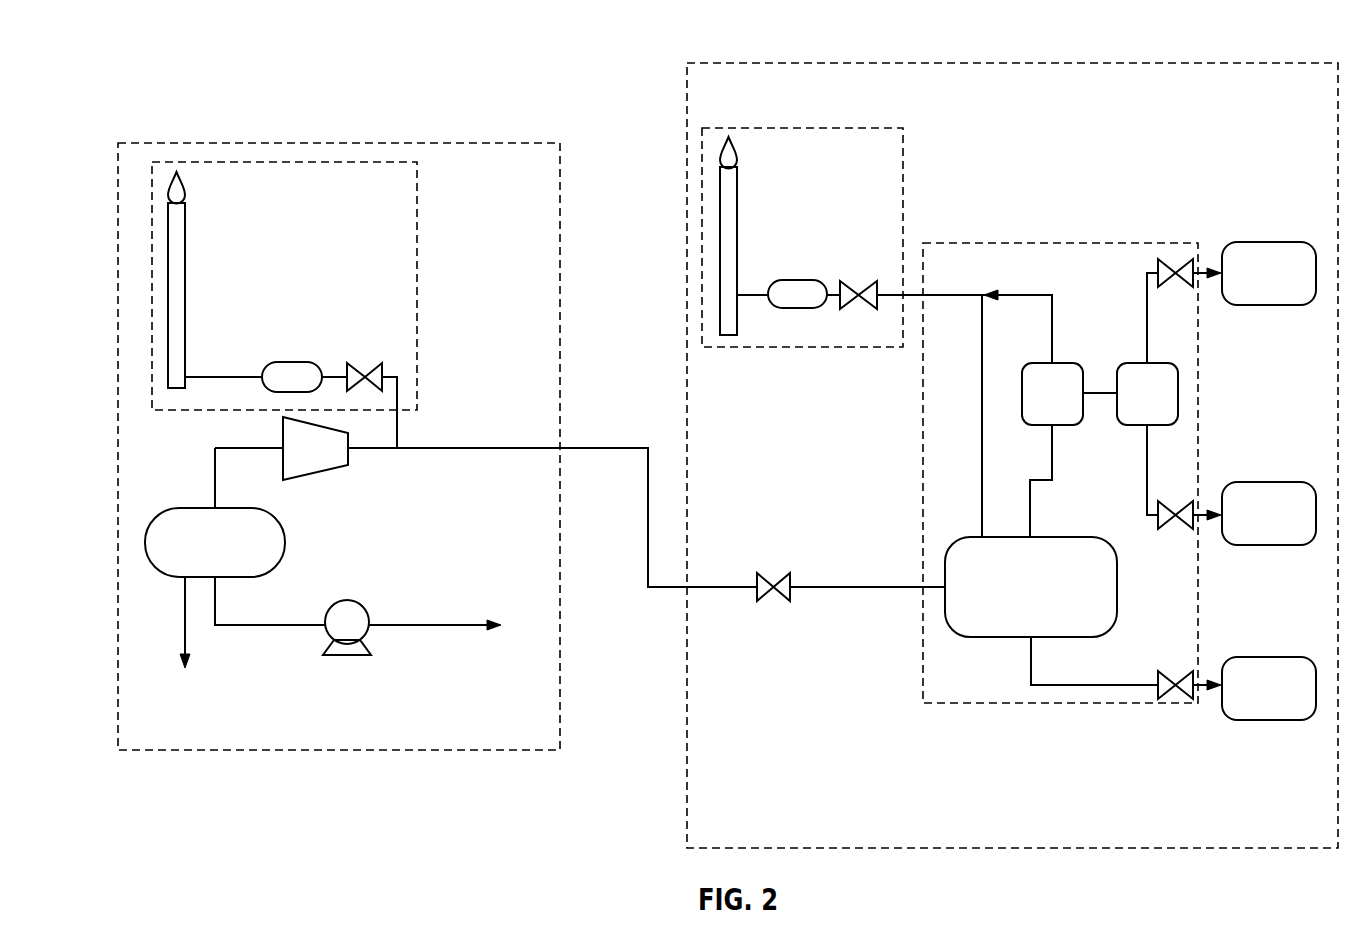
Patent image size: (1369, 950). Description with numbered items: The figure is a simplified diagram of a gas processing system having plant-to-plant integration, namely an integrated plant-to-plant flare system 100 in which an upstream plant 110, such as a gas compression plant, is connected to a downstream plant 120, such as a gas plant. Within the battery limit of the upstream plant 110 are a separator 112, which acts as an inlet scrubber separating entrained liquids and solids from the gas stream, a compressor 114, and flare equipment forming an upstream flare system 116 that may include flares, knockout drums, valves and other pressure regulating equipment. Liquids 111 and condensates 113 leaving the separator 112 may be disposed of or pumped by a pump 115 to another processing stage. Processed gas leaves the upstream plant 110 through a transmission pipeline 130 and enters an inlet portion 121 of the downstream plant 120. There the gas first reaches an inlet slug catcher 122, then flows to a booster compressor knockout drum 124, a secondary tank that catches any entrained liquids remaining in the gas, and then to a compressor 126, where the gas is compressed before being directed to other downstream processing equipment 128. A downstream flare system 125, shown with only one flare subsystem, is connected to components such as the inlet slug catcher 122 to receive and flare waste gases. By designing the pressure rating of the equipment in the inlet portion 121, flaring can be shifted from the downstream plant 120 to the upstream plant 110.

The integrated plant-to-plant flare system 100 is at (590, 50).
The upstream plant 110 is at (343, 143).
The liquids 111 is at (162, 711).
The separator 112 is at (192, 558).
The condensates 113 is at (503, 641).
The compressor 114 is at (294, 462).
The pump 115 is at (348, 600).
The upstream flare system 116 is at (418, 208).
The downstream plant 120 is at (1300, 63).
The inlet portion 121 is at (947, 703).
The inlet slug catcher 122 is at (1009, 602).
The booster compressor knockout drum 124 is at (1030, 408).
The downstream flare system 125 is at (876, 128).
The compressor 126 is at (1125, 408).
The downstream processing equipment 128 is at (1247, 288).
The transmission pipeline 130 is at (605, 448).